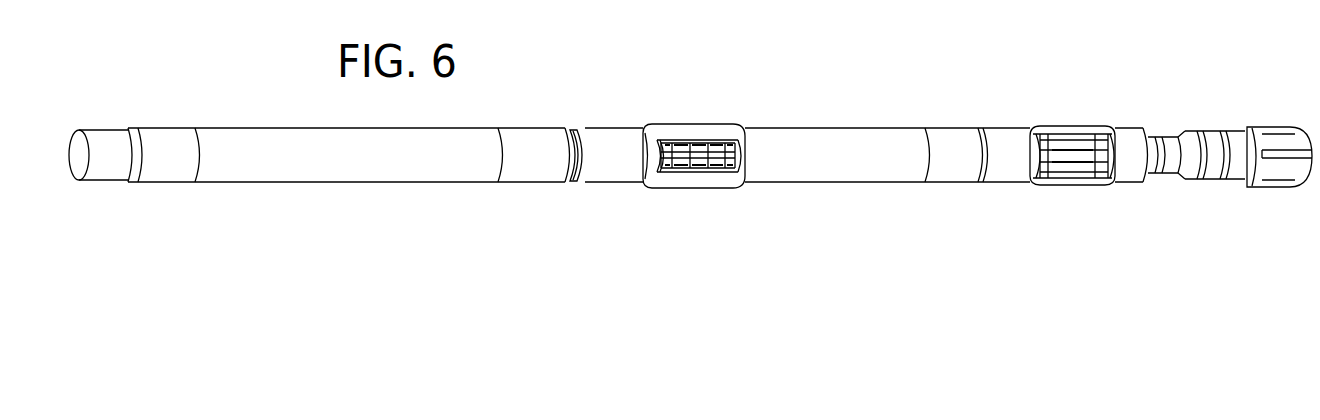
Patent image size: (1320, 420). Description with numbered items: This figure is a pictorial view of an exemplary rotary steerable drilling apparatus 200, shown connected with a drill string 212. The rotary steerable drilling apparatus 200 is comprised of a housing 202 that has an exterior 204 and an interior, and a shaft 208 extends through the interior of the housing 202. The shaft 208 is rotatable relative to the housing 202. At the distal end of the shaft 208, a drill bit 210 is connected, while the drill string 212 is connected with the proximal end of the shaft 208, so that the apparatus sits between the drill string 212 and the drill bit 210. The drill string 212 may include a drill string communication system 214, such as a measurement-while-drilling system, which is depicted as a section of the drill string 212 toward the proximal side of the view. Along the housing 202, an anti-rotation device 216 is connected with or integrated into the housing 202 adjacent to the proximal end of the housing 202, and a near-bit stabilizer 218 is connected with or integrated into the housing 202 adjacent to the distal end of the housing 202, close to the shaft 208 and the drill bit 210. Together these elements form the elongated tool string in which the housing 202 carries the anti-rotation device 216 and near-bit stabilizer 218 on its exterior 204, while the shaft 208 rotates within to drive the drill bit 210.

The rotary steerable drilling apparatus 200 is at (820, 177).
The housing 202 is at (878, 130).
The exterior 204 is at (772, 128).
The shaft 208 is at (1168, 172).
The drill bit 210 is at (1275, 170).
The drill string 212 is at (133, 182).
The drill string communication system 214 is at (379, 172).
The anti-rotation device 216 is at (688, 123).
The near-bit stabilizer 218 is at (1060, 128).